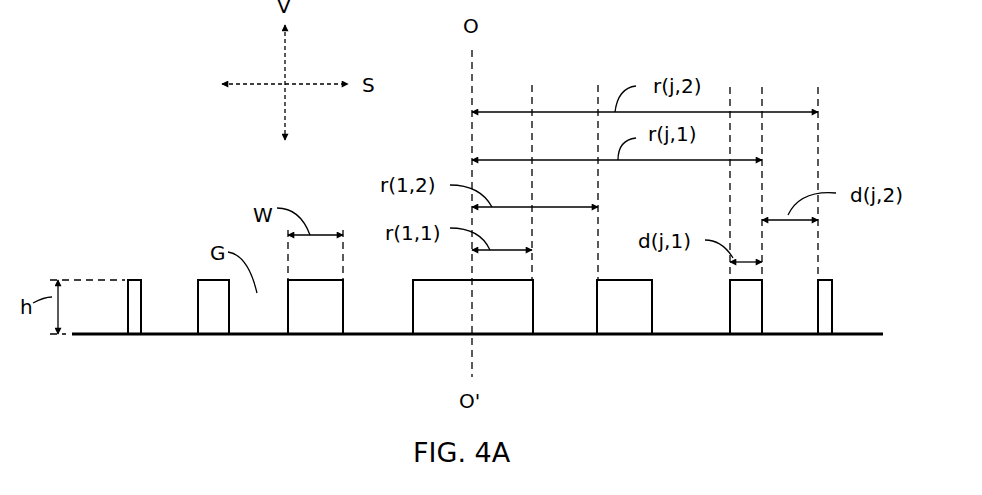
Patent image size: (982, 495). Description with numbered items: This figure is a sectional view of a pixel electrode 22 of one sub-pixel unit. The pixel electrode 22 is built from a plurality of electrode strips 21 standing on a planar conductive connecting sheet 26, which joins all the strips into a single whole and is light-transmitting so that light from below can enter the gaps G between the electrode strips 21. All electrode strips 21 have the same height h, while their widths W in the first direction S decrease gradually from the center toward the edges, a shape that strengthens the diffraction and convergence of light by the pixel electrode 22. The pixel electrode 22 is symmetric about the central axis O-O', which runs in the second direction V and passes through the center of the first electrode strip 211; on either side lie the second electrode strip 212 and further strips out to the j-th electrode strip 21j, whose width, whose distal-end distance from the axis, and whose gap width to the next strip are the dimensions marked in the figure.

The pixel electrode 22 is at (124, 140).
The electrode strip 21 is at (197, 292).
The j-th electrode strip 21j is at (215, 323).
The first electrode strip 211 is at (505, 313).
The second electrode strip 212 is at (322, 323).
The conductive connecting sheet 26 is at (800, 337).